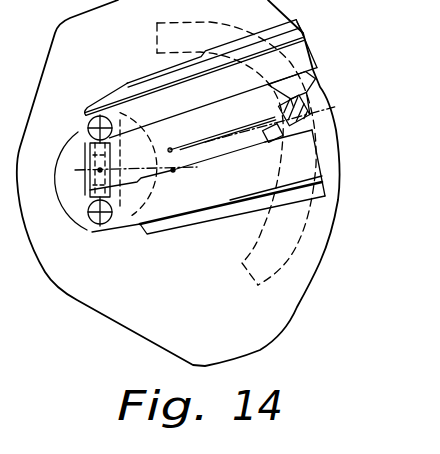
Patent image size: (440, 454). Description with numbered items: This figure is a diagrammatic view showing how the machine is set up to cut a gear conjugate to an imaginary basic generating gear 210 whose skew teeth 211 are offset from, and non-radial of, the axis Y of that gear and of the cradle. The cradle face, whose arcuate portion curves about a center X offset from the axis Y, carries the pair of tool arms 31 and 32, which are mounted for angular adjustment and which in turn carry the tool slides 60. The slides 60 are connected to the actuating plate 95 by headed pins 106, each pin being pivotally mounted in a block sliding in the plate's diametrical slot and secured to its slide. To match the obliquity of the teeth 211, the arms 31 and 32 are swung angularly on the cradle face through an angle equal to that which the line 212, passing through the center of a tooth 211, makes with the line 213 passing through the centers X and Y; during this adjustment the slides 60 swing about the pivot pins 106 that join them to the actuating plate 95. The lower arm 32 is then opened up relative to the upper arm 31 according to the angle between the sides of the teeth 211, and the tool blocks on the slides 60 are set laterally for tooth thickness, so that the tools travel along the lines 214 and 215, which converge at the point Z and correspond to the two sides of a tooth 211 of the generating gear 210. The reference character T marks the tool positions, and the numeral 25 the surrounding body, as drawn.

The housing body 25 is at (123, 313).
The tool arm 31 is at (304, 32).
The tool arm 32 is at (327, 192).
The tool slides 60 is at (201, 126).
The actuating plate 95 is at (72, 208).
The headed pin 106 is at (87, 127).
The imaginary basic generating gear 210 is at (284, 272).
The skew teeth 211 is at (308, 118).
The line 212 is at (332, 108).
The line 213 is at (208, 168).
The line 214 is at (229, 140).
The line 215 is at (219, 156).
The center X is at (98, 169).
The axis of the cradle Y is at (175, 168).
The point Z is at (171, 148).
The T members T is at (272, 110).